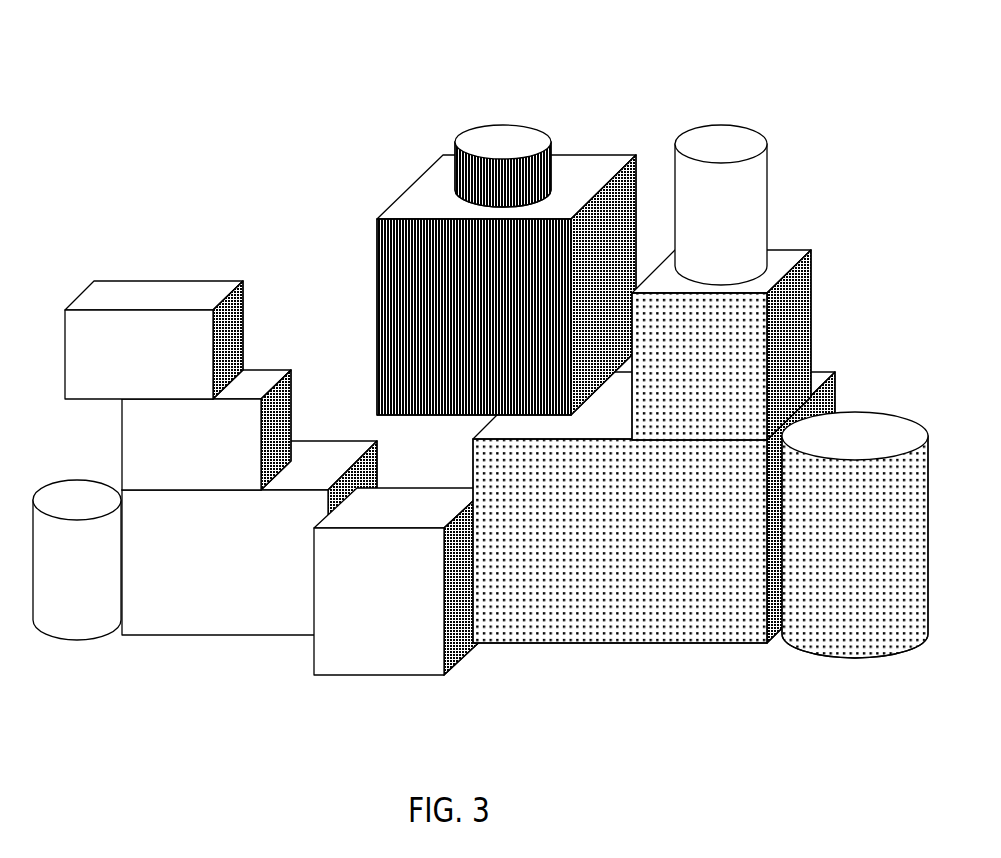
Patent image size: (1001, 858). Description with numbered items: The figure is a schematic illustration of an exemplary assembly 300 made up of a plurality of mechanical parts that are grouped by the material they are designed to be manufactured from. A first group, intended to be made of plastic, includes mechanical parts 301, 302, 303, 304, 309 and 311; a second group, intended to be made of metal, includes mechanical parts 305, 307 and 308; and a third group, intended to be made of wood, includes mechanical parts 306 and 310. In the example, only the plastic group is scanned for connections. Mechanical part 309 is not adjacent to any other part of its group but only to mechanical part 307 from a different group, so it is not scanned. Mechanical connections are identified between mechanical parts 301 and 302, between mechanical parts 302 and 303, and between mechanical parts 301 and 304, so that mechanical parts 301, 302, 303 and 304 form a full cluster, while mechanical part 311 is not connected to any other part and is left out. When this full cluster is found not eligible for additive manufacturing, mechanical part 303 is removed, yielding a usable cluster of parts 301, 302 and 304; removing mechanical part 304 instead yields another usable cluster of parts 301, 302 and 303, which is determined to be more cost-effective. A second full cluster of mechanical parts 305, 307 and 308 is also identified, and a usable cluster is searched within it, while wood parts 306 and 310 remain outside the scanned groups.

The assembly 300 is at (313, 107).
The mechanical part 301 is at (249, 538).
The mechanical part 302 is at (206, 430).
The mechanical part 303 is at (154, 340).
The mechanical part 304 is at (400, 581).
The mechanical part 305 is at (654, 507).
The mechanical part 306 is at (506, 285).
The mechanical part 307 is at (721, 345).
The mechanical part 308 is at (855, 535).
The mechanical part 309 is at (721, 205).
The mechanical part 310 is at (503, 166).
The mechanical part 311 is at (77, 560).